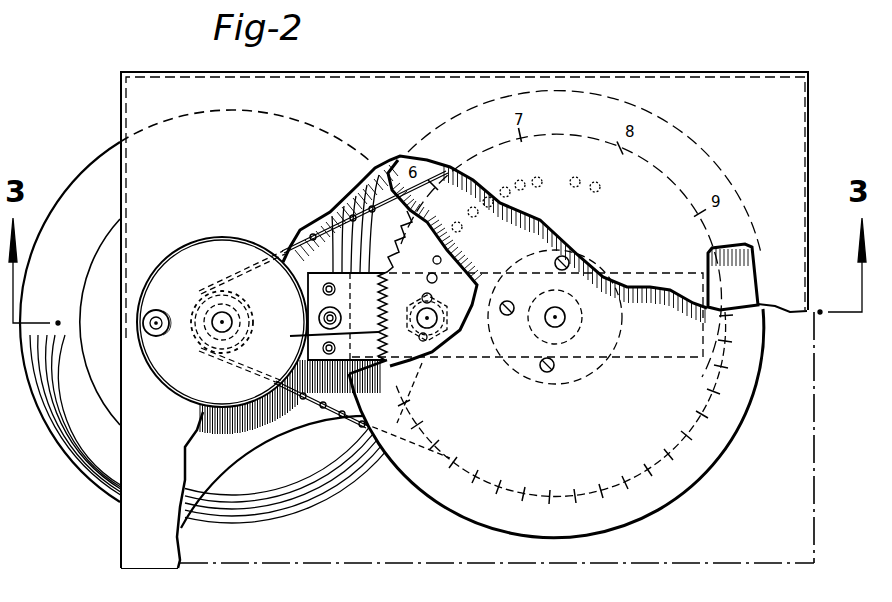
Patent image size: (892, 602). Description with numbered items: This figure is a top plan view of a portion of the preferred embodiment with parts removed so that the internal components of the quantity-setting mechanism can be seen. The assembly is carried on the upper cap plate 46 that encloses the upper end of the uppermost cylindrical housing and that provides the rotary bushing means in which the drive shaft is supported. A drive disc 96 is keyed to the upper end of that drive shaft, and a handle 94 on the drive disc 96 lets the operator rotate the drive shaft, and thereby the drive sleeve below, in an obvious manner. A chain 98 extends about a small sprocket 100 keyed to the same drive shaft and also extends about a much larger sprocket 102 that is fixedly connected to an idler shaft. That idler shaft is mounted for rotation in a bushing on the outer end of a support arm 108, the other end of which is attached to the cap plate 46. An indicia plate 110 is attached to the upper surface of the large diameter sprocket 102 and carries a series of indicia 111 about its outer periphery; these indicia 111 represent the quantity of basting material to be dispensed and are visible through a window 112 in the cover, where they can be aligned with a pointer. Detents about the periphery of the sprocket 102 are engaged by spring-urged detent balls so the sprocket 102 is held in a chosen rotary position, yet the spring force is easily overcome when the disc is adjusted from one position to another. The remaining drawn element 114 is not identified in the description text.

The upper cap plate 46 is at (215, 319).
The handle 94 is at (142, 318).
The drive disc 96 is at (182, 390).
The chain 98 is at (314, 420).
The sprocket 100 is at (221, 300).
The large diameter sprocket 102 is at (308, 340).
The support arm 108 is at (308, 300).
The indicia plate 110 is at (688, 492).
The indicia 111 is at (718, 450).
The window 112 is at (745, 272).
The cover plate 114 is at (812, 106).